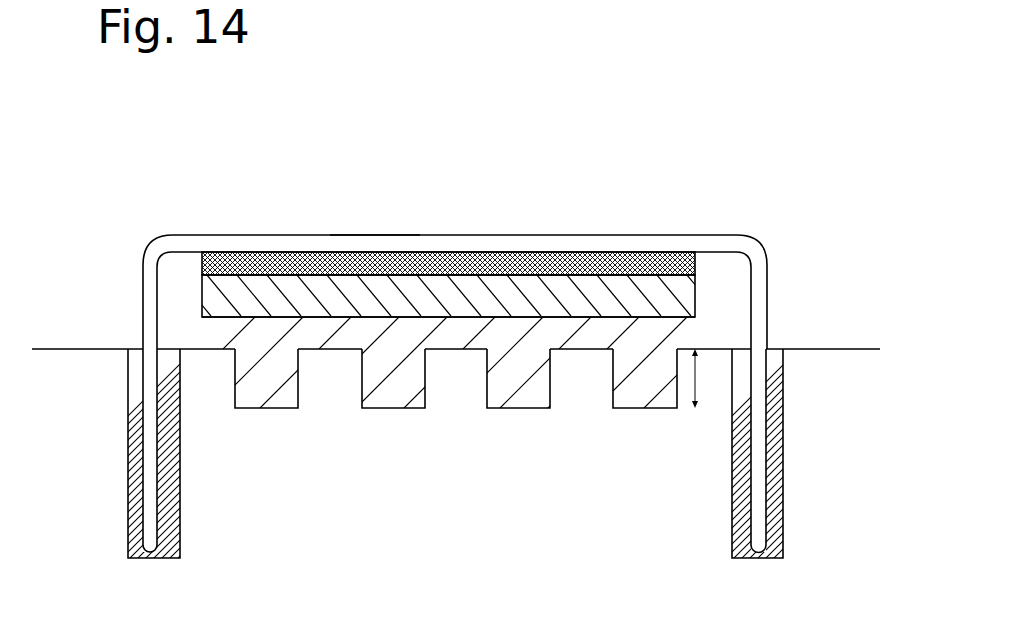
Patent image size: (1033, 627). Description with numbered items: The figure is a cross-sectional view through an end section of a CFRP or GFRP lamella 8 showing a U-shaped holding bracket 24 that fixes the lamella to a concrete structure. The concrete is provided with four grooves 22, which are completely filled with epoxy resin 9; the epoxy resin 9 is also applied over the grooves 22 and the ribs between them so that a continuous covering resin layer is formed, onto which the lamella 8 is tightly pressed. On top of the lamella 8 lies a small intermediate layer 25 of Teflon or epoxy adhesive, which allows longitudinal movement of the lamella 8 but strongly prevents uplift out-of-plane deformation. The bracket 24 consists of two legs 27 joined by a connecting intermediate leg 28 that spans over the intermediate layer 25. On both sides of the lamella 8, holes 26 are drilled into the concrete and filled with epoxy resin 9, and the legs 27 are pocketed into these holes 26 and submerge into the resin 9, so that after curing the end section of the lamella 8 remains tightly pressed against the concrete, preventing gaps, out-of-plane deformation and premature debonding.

The CFRP or GFRP lamella 8 is at (543, 286).
The epoxy resin 9 is at (642, 338).
The grooves 22 is at (262, 410).
The U-shaped holding bracket 24 is at (373, 233).
The intermediate layer 25 is at (283, 262).
The holes 26 is at (135, 453).
The legs 27 is at (150, 510).
The connecting intermediate leg 28 is at (473, 241).